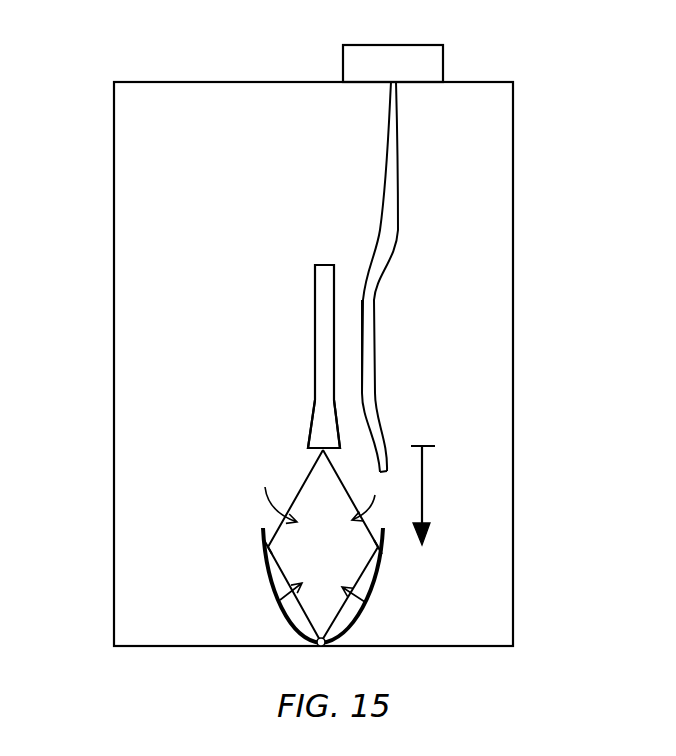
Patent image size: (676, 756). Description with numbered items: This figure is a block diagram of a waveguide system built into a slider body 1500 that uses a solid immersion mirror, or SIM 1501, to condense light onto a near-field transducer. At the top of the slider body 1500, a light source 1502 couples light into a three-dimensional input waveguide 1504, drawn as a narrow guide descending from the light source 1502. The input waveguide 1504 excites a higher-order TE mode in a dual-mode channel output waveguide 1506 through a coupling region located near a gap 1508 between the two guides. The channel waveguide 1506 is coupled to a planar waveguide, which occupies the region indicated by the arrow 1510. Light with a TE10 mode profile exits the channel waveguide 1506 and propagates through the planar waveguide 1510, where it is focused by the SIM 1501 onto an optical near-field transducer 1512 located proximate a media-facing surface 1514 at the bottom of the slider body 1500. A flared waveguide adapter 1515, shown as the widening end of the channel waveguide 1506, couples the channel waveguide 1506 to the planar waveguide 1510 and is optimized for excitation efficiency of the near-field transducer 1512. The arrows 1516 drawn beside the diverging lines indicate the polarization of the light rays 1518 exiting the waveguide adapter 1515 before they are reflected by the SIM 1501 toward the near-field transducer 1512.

The slider body 1500 is at (130, 82).
The solid immersion mirror 1501 is at (272, 592).
The light source 1502 is at (433, 44).
The three-dimensional input waveguide 1504 is at (395, 162).
The channel output waveguide 1506 is at (320, 293).
The gap 1508 is at (349, 347).
The planar waveguide region arrow 1510 is at (422, 475).
The optical near-field transducer 1512 is at (317, 647).
The media-facing surface 1514 is at (133, 648).
The flared waveguide adapter 1515 is at (318, 427).
The polarization arrows 1516 is at (325, 498).
The light rays 1518 is at (370, 535).